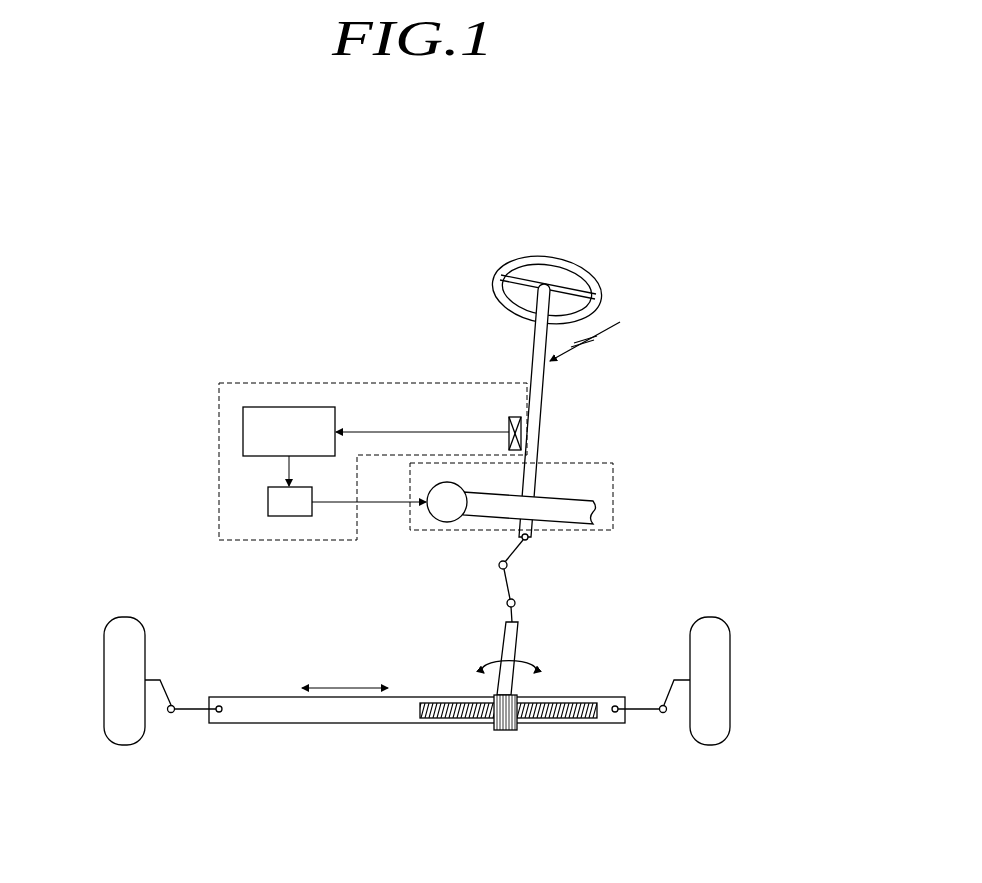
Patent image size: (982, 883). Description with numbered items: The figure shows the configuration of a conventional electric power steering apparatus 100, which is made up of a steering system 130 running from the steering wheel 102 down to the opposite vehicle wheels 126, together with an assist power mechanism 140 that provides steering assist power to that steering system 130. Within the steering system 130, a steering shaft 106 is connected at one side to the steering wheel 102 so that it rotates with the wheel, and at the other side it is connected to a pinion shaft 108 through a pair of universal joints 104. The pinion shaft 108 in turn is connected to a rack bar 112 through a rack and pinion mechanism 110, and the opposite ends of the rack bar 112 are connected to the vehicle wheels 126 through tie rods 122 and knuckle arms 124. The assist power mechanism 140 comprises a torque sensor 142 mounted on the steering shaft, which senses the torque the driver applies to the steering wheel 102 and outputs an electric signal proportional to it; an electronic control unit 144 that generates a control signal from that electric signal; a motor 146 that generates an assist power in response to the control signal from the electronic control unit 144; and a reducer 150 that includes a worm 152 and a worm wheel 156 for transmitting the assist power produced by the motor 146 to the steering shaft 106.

The electric power steering apparatus 100 is at (265, 202).
The steering wheel 102 is at (493, 273).
The universal joints 104 is at (517, 552).
The steering shaft 106 is at (545, 376).
The pinion shaft 108 is at (500, 642).
The rack and pinion mechanism 110 is at (507, 730).
The rack bar 112 is at (275, 703).
The tie rods 122 is at (650, 705).
The knuckle arms 124 is at (160, 680).
The vehicle wheels 126 is at (718, 625).
The steering system 130 is at (602, 335).
The assist power mechanism 140 is at (219, 416).
The torque sensor 142 is at (509, 428).
The electronic control unit 144 is at (335, 412).
The motor 146 is at (268, 502).
The reducer 150 is at (613, 496).
The worm 152 is at (447, 508).
The worm wheel 156 is at (545, 492).